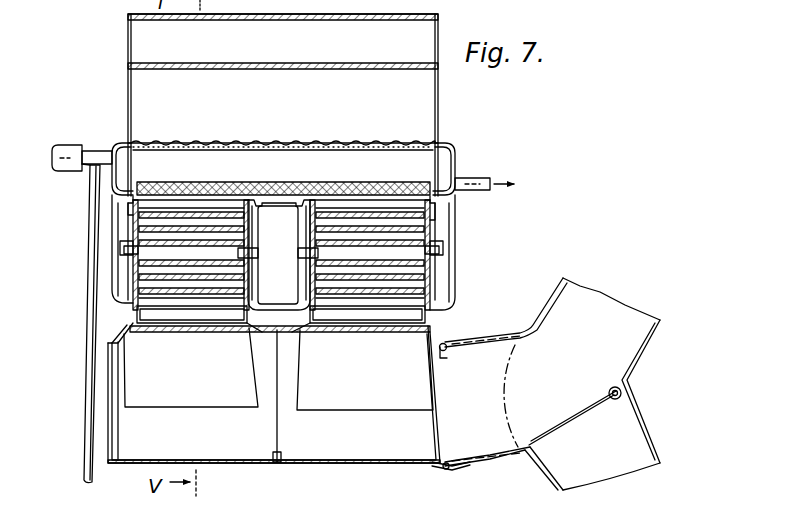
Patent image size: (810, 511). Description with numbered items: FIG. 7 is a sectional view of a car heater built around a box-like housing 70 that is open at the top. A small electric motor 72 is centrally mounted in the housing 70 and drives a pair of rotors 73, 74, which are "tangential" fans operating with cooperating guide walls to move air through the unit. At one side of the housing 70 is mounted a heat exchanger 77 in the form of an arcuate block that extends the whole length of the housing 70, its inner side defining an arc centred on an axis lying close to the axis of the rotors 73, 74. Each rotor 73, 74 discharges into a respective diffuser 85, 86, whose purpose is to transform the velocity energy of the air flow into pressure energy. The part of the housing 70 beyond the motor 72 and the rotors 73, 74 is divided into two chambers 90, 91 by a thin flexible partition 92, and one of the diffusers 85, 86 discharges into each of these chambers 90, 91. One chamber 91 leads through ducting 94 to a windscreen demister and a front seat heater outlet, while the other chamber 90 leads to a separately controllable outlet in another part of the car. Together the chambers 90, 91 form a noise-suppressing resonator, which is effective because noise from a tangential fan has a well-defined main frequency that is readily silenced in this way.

The housing 70 is at (444, 144).
The electric motor 72 is at (273, 218).
The rotor 73 is at (150, 229).
The rotor 74 is at (405, 237).
The heat exchanger 77 is at (273, 160).
The diffuser 85 is at (145, 366).
The diffuser 86 is at (412, 338).
The chamber 90 is at (202, 449).
The chamber 91 is at (342, 449).
The partition 92 is at (280, 362).
The ducting 94 is at (633, 337).